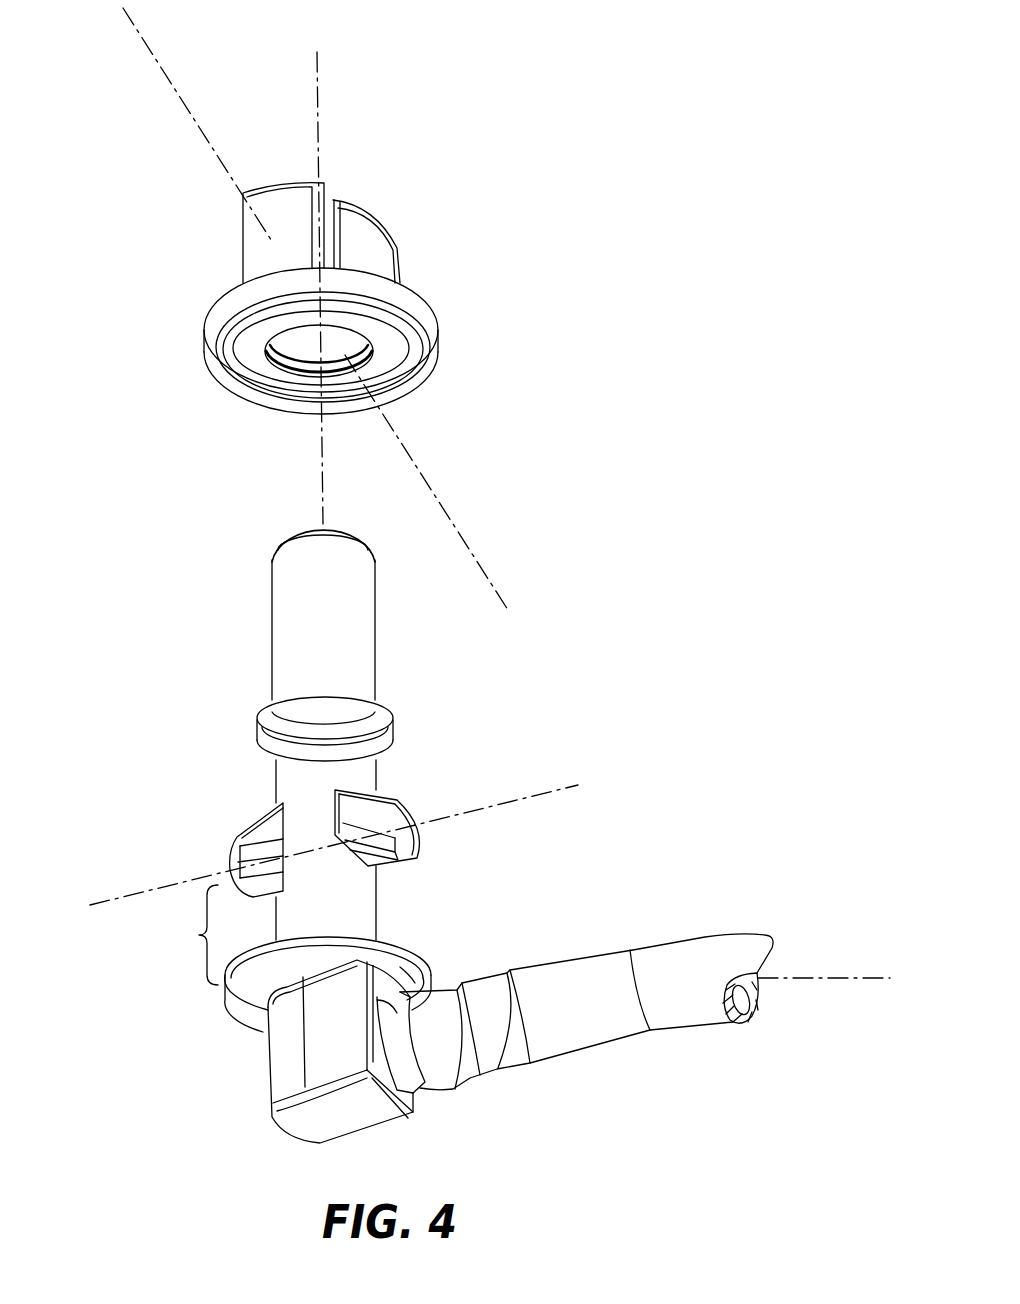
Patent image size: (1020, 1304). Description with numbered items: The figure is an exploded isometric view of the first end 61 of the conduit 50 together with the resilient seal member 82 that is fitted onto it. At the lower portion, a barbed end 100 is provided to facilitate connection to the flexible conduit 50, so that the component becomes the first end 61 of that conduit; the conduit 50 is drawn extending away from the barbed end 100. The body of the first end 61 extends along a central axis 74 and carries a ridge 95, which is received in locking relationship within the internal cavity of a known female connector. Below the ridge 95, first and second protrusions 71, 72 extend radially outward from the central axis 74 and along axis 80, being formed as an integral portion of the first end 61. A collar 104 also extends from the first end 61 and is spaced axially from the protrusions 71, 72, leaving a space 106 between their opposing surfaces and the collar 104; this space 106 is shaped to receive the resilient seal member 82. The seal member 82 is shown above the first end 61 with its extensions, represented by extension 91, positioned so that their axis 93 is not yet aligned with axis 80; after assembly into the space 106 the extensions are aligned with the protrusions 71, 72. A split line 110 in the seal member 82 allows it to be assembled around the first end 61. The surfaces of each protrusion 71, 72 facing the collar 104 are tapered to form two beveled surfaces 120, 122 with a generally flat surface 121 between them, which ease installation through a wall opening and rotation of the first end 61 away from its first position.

The conduit 50 is at (701, 945).
The first end 61 is at (374, 920).
The first protrusion 71 is at (362, 795).
The second protrusion 72 is at (258, 832).
The central axis 74 is at (318, 113).
The axis 80 is at (518, 797).
The resilient seal member 82 is at (393, 258).
The extension 91 is at (245, 240).
The axis 93 is at (440, 498).
The ridge 95 is at (385, 725).
The barbed end 100 is at (498, 1080).
The collar 104 is at (243, 1020).
The space 106 is at (184, 935).
The split line 110 is at (365, 368).
The tapered surface 120 is at (248, 843).
The flat surface 121 is at (232, 866).
The tapered surface 122 is at (253, 887).